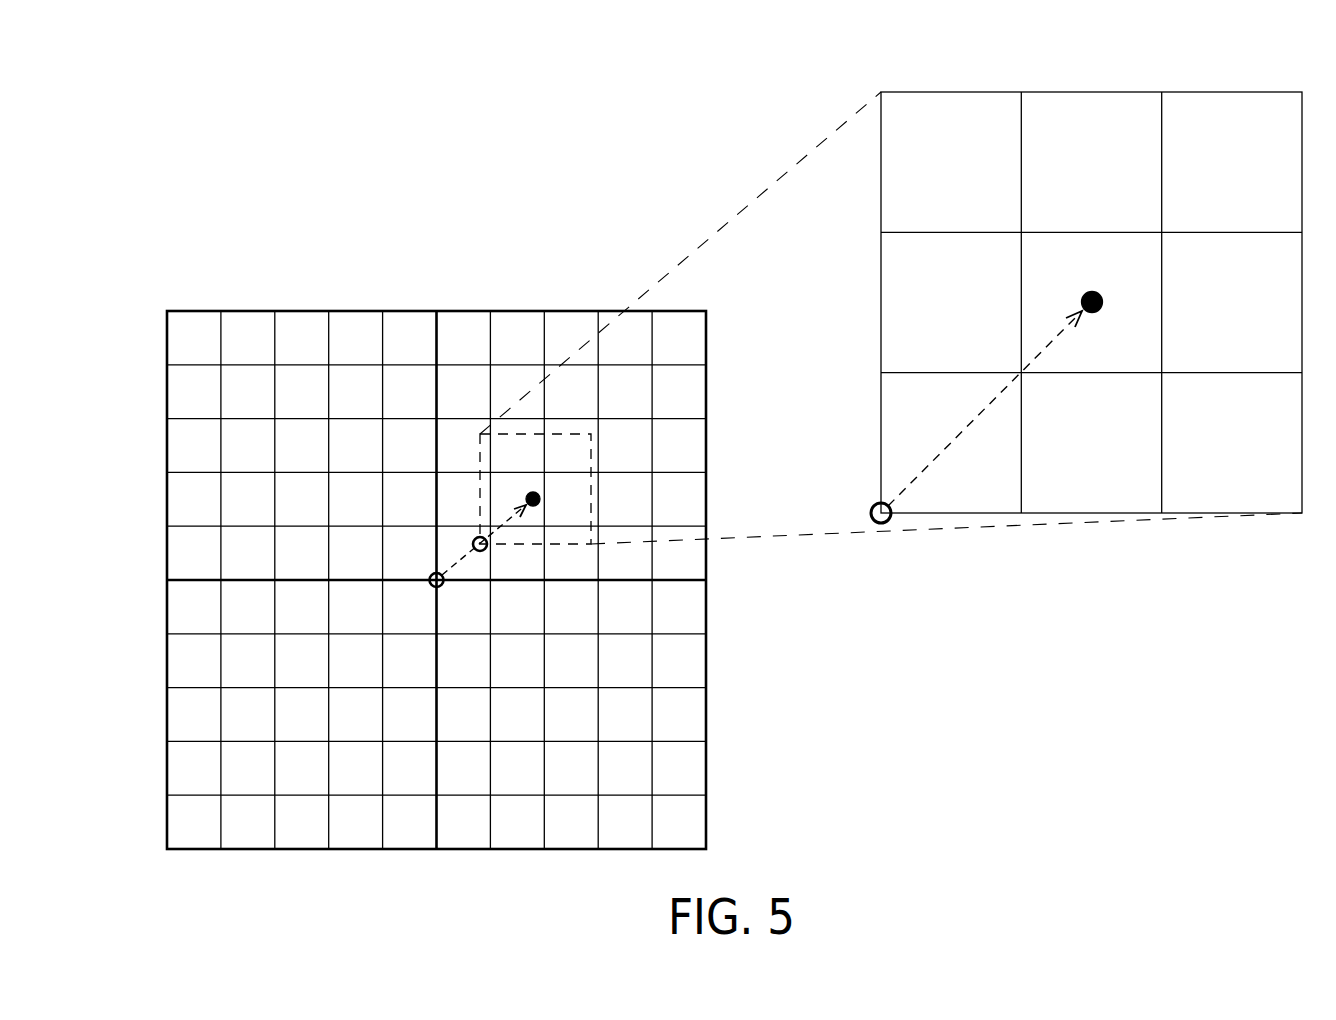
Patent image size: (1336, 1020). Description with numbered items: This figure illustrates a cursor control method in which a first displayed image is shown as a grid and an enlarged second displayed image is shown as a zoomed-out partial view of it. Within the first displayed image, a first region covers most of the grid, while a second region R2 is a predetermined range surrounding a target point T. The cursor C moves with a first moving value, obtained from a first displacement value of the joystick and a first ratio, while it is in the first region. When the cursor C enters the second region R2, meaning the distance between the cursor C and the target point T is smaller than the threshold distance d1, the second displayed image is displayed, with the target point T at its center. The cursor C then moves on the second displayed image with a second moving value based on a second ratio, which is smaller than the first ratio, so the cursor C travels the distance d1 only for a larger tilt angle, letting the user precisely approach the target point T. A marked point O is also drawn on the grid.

The second region R2 is at (591, 456).
The origin point O is at (422, 593).
The cursor C is at (669, 519).
The target point T is at (815, 387).
The threshold distance d1 is at (762, 443).